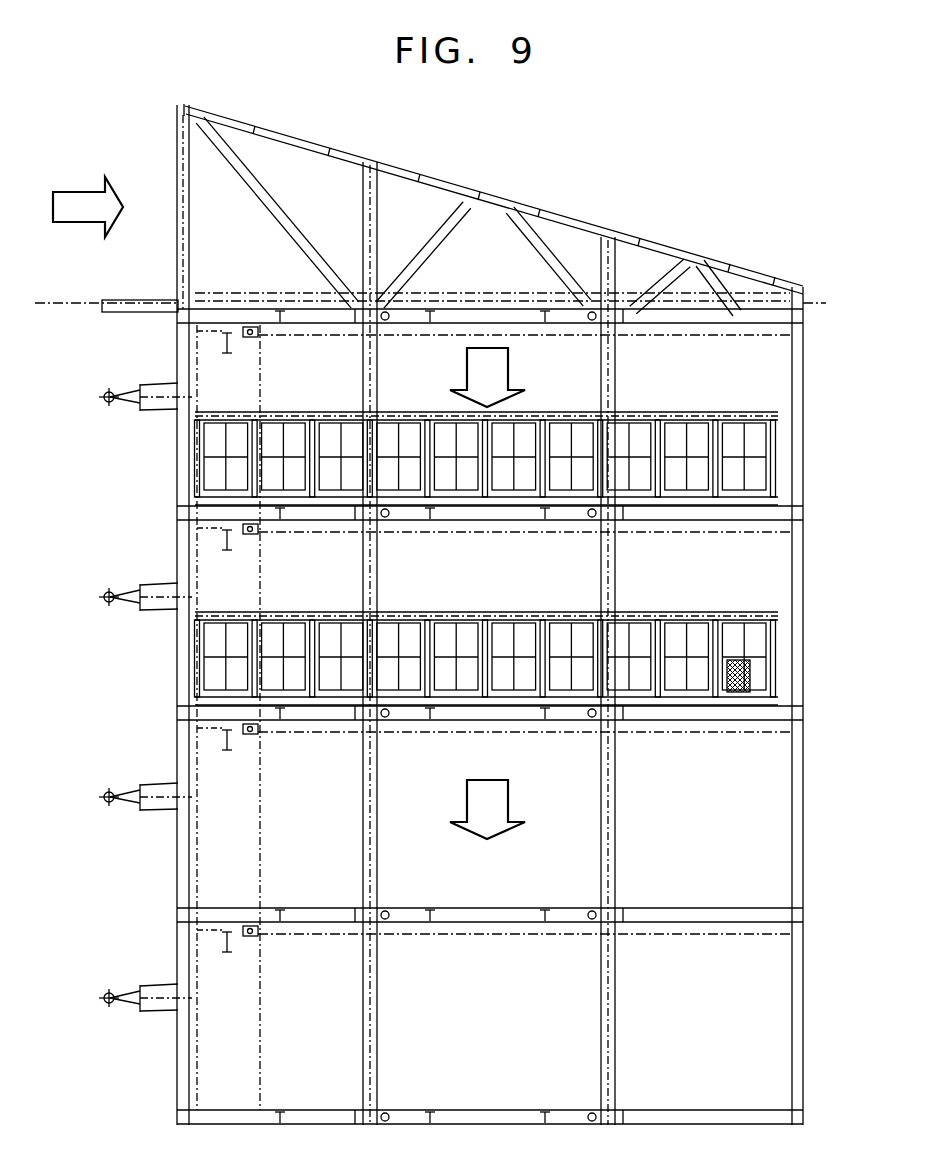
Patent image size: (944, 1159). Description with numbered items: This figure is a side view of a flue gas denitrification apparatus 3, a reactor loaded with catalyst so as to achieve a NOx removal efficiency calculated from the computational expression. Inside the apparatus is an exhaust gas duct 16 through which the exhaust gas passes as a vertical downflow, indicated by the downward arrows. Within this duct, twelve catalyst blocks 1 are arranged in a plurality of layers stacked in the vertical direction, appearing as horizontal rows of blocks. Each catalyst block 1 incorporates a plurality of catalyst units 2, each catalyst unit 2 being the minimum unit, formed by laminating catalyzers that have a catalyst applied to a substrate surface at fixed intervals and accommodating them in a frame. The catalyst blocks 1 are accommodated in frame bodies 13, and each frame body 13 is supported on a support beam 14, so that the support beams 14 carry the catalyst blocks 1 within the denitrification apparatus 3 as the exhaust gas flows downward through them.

The catalyst block 1 is at (762, 418).
The catalyst unit 2 is at (752, 678).
The flue gas denitrification apparatus 3 is at (812, 641).
The frame body 13 is at (775, 498).
The support beam 14 is at (192, 513).
The exhaust gas duct 16 is at (718, 839).